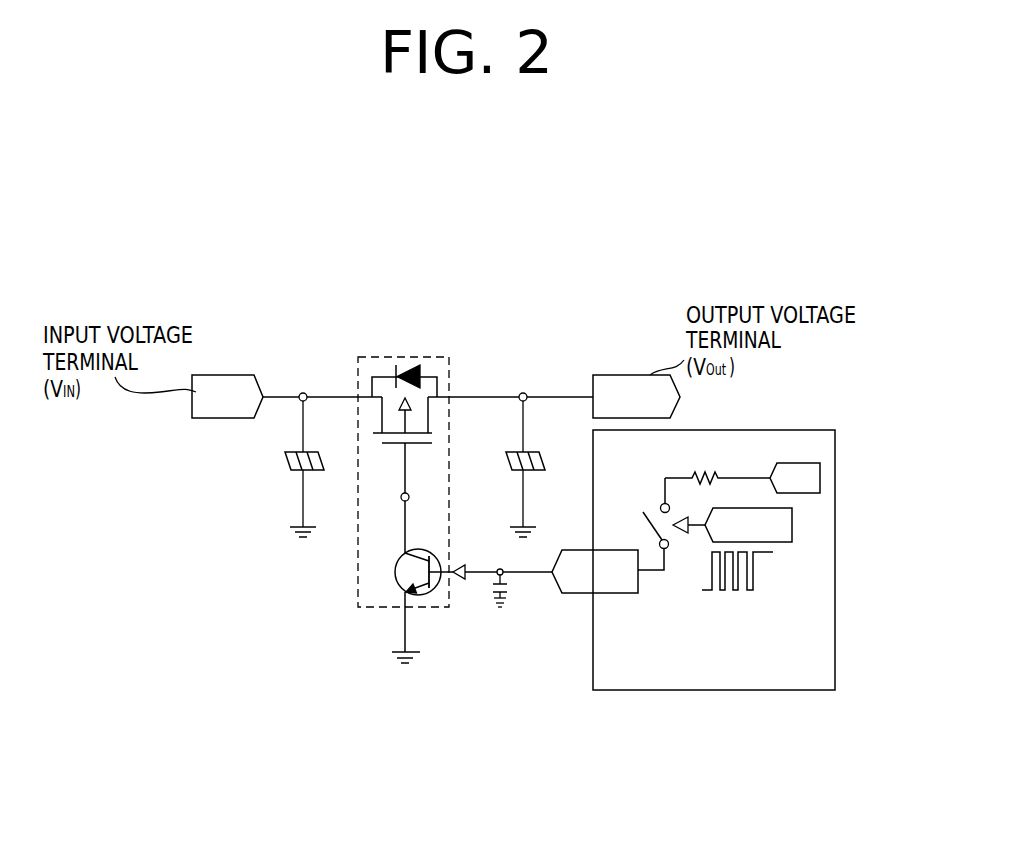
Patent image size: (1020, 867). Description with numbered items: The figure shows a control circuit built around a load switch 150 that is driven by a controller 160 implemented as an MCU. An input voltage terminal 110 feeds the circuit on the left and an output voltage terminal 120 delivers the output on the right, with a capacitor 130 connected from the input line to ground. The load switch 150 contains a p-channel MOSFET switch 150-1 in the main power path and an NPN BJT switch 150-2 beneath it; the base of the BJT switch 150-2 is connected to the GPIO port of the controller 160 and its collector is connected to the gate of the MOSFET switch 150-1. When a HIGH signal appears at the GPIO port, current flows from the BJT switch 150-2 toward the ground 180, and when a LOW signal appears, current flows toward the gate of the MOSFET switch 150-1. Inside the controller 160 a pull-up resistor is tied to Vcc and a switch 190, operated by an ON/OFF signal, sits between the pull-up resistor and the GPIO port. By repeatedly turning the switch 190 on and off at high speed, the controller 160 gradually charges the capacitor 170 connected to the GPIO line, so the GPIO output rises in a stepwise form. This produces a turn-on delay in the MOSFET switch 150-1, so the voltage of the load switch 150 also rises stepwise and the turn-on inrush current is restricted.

The input voltage terminal 110 is at (233, 375).
The output voltage terminal 120 is at (617, 375).
The capacitor 130 is at (287, 457).
The load switch 150 is at (411, 357).
The p-channel MOSFET switch 150-1 is at (428, 392).
The NPN BJT switch 150-2 is at (397, 569).
The controller (MCU) 160 is at (835, 668).
The capacitor C1 170 is at (471, 615).
The ground 180 is at (405, 668).
The switch 190 is at (657, 528).